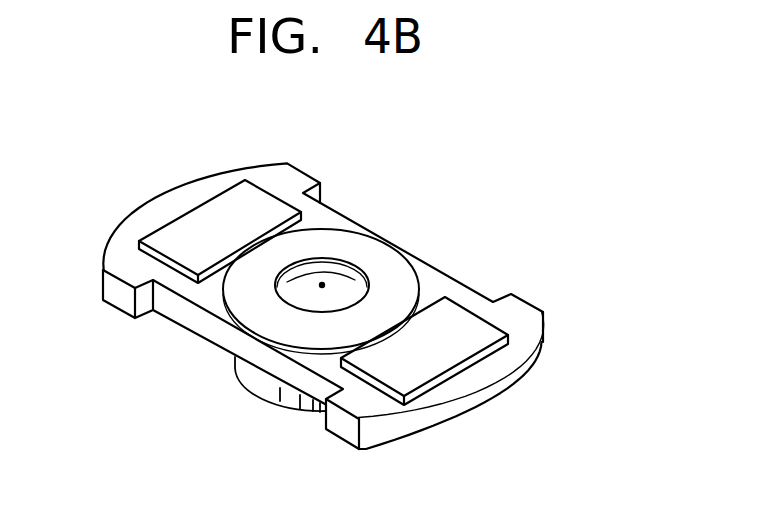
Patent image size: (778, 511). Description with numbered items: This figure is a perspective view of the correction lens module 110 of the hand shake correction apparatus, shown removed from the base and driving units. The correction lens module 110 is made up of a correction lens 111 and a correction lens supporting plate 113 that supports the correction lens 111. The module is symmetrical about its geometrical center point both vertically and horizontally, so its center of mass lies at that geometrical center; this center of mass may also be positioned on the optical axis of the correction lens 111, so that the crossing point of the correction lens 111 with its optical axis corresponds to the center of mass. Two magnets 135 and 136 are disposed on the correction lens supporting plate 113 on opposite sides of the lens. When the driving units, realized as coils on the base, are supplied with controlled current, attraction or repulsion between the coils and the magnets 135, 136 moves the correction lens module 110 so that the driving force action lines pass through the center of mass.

The correction lens module 110 is at (225, 478).
The correction lens 111 is at (303, 298).
The correction lens supporting plate 113 is at (340, 427).
The magnet 135 is at (208, 212).
The magnet 136 is at (462, 328).